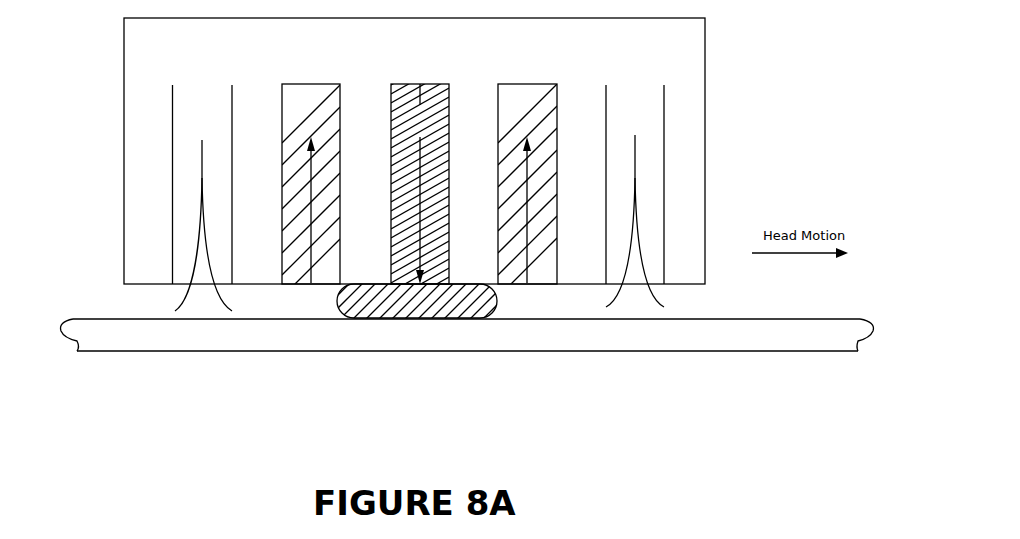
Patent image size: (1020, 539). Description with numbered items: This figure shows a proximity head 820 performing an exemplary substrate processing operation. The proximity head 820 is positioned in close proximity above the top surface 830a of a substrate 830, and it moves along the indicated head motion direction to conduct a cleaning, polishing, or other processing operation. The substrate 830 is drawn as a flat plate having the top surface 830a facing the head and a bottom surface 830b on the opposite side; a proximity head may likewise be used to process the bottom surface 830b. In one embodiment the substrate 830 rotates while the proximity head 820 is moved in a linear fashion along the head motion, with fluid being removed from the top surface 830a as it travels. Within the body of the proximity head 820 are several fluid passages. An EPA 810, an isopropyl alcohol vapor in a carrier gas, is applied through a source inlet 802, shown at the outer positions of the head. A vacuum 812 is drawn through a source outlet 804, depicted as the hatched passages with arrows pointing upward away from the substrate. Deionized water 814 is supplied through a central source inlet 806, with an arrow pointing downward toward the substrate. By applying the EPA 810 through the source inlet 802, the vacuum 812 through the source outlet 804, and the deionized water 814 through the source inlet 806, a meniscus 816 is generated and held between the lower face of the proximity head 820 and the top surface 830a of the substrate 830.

The source inlet 802 is at (208, 72).
The source outlet 804 is at (320, 70).
The source inlet 806 is at (412, 68).
The EPA 810 is at (202, 174).
The vacuum 812 is at (310, 175).
The deionized water 814 is at (421, 100).
The meniscus 816 is at (420, 302).
The proximity head 820 is at (705, 120).
The substrate 830 is at (467, 342).
The top surface 830a is at (732, 311).
The bottom surface 830b is at (632, 362).